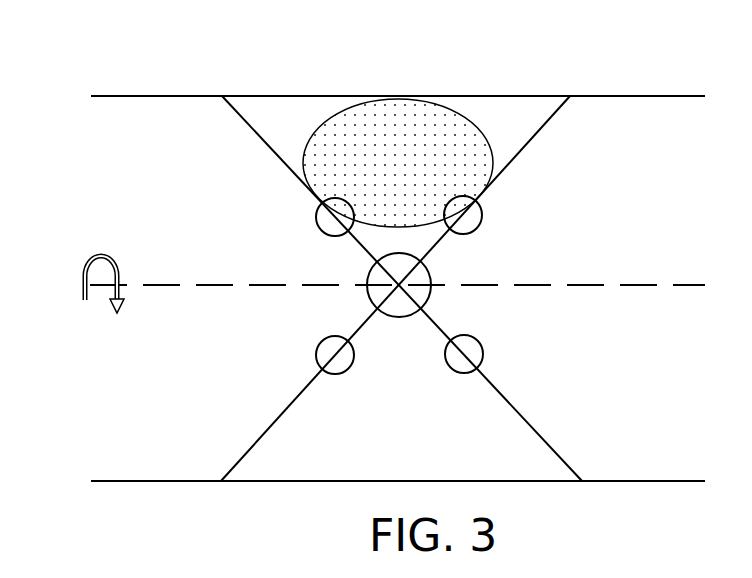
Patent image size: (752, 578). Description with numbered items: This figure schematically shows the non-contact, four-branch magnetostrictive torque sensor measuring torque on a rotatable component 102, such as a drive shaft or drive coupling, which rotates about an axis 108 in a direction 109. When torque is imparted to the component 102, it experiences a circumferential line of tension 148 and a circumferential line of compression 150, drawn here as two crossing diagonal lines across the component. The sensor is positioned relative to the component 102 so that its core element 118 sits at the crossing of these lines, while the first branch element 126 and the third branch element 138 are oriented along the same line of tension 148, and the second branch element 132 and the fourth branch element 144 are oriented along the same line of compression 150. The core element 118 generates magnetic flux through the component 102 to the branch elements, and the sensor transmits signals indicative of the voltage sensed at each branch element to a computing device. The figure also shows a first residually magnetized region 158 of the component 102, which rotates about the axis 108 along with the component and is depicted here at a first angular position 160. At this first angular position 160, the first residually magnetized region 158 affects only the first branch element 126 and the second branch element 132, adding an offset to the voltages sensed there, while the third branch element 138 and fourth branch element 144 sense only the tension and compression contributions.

The component 102 is at (115, 88).
The axis 108 is at (643, 285).
The direction 109 is at (100, 252).
The core element 118 is at (357, 270).
The first branch element 126 is at (494, 212).
The second branch element 132 is at (303, 219).
The third branch element 138 is at (303, 358).
The fourth branch element 144 is at (496, 352).
The circumferential line of tension 148 is at (546, 125).
The circumferential line of compression 150 is at (250, 127).
The first residually magnetized region 158 is at (461, 110).
The first angular position 160 is at (496, 118).